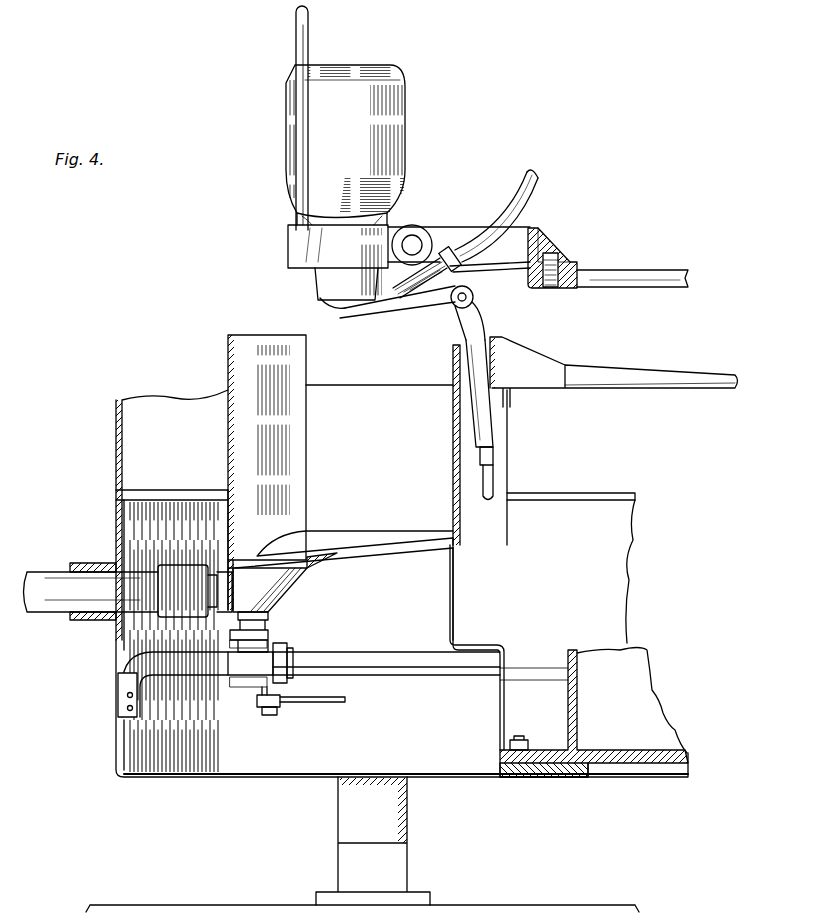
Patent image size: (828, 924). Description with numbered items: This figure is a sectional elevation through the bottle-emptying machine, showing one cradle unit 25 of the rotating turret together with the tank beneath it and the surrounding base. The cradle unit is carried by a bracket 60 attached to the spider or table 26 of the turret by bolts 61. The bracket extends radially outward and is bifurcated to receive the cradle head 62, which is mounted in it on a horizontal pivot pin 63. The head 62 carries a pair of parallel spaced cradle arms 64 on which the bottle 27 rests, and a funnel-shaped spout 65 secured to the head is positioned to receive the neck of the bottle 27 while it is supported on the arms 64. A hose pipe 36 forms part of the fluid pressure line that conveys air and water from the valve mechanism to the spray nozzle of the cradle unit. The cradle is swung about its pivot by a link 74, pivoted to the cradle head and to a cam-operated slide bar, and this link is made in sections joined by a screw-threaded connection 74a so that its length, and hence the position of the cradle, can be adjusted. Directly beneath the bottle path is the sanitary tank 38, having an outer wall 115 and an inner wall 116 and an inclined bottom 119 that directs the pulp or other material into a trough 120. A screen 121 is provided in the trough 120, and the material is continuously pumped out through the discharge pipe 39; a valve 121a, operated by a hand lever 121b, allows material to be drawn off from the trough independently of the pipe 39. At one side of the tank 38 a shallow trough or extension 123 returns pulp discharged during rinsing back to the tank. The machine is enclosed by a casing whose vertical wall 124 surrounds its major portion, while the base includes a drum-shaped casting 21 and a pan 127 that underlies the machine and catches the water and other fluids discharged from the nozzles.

The drum-shaped casting 21 is at (570, 708).
The cradle unit 25 is at (421, 199).
The spider or table 26 is at (622, 278).
The bottle 27 is at (395, 108).
The hose pipe 36 is at (541, 179).
The tank 38 is at (366, 405).
The discharge pipe 39 is at (45, 582).
The bracket 60 is at (470, 232).
The bolt 61 is at (552, 255).
The cradle head 62 is at (404, 288).
The horizontal pivot pin 63 is at (413, 245).
The cradle arm 64 is at (300, 33).
The funnel-shaped spout 65 is at (340, 280).
The link 74 is at (494, 486).
The screw-threaded connection 74a is at (494, 462).
The outer wall 115 is at (228, 350).
The inner wall 116 is at (453, 357).
The inclined bottom 119 is at (392, 545).
The trough 120 is at (292, 580).
The screen 121 is at (268, 571).
The valve 121a is at (262, 660).
The hand lever 121b is at (322, 704).
The shallow trough or extension 123 is at (652, 372).
The vertical wall 124 is at (120, 458).
The pan 127 is at (122, 742).